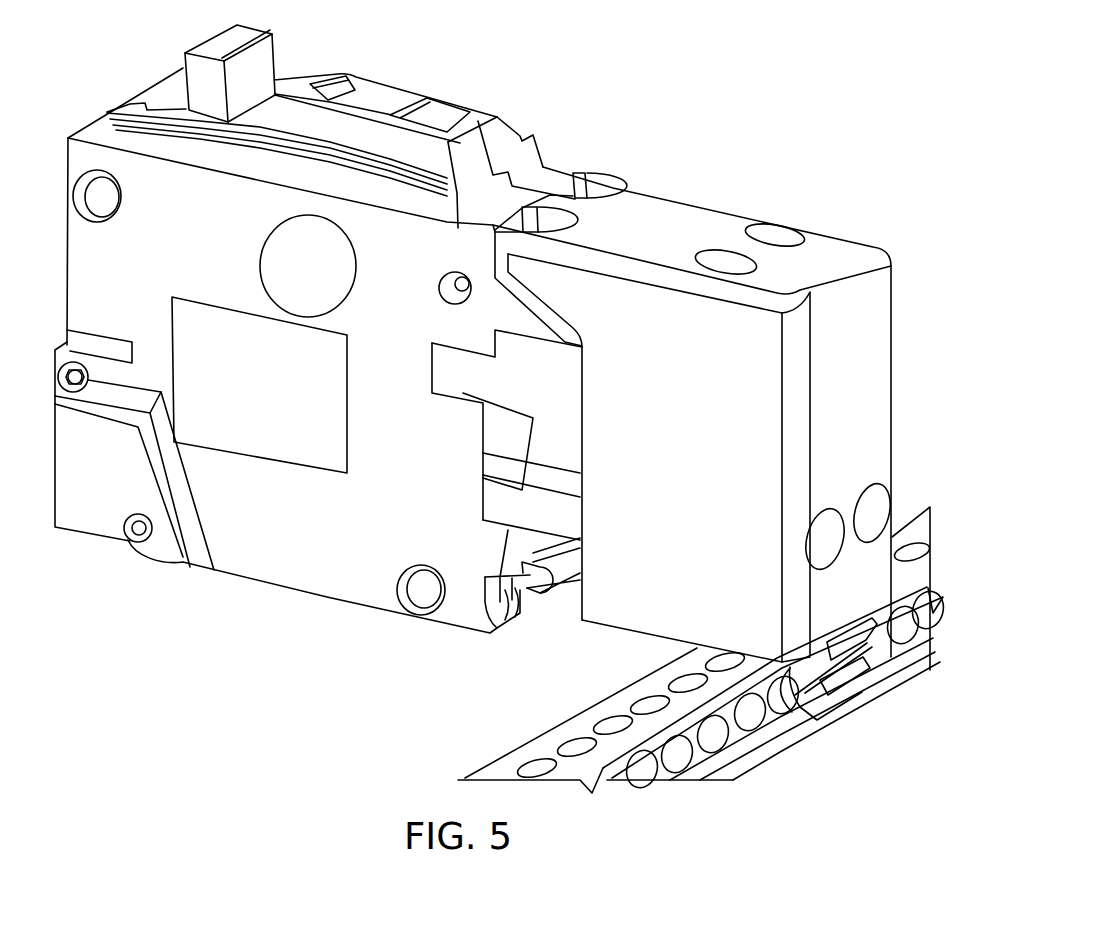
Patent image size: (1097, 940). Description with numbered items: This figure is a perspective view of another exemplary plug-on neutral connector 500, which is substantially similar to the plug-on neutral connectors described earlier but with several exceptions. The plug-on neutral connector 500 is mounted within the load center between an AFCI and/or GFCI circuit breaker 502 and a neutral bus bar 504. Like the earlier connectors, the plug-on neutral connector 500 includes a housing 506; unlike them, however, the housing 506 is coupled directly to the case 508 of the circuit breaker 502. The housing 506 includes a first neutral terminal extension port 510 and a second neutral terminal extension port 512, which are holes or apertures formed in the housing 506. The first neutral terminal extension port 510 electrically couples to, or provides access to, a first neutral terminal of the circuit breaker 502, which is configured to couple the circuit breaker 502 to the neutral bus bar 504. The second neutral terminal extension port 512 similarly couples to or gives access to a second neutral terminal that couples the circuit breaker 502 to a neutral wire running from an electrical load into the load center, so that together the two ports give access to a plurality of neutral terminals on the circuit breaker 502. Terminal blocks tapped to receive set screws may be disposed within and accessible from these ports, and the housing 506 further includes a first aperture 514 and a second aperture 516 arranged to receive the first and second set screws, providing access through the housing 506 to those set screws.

The plug-on neutral connector 500 is at (690, 193).
The circuit breaker 502 is at (518, 128).
The neutral bus bar 504 is at (917, 537).
The housing 506 is at (880, 262).
The case 508 is at (282, 561).
The first neutral terminal extension port 510 is at (813, 553).
The second neutral terminal extension port 512 is at (868, 507).
The first aperture 514 is at (723, 250).
The second aperture 516 is at (827, 237).